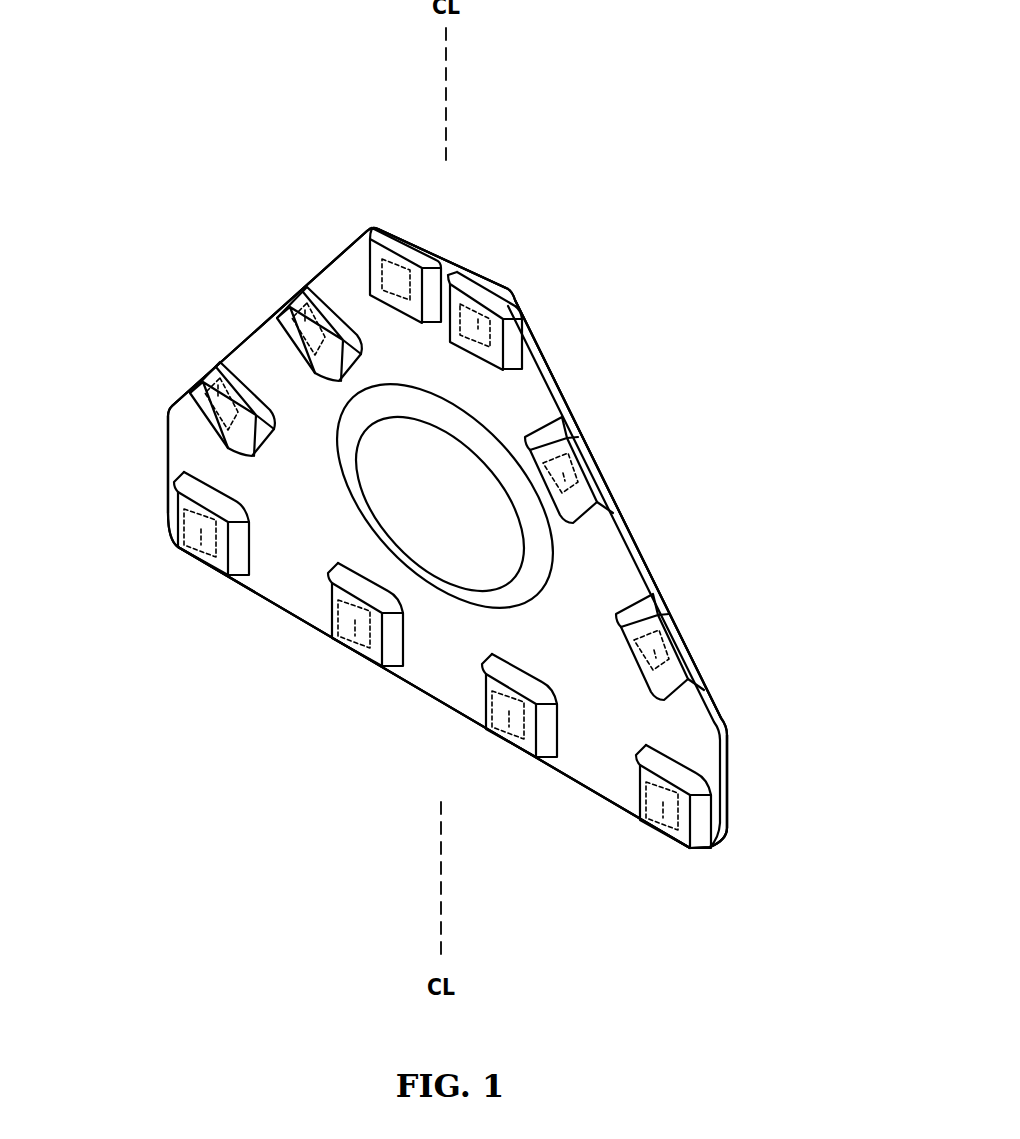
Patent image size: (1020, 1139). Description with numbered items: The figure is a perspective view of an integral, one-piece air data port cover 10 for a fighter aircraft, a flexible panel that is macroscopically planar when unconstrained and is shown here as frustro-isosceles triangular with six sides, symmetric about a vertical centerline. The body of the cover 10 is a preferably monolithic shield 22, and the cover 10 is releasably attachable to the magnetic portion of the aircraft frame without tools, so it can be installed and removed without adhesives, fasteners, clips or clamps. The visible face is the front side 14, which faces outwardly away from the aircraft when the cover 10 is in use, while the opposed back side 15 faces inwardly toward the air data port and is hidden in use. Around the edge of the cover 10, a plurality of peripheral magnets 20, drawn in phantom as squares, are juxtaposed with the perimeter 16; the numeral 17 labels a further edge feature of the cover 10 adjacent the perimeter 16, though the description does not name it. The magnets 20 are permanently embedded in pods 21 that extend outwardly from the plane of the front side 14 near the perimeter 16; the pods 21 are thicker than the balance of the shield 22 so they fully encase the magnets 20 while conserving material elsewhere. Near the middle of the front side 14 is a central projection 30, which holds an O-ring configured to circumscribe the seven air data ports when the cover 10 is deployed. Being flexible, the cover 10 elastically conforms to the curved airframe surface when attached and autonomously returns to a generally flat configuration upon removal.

The air data port cover 10 is at (630, 118).
The front side 14 is at (563, 645).
The back side 15 is at (728, 785).
The perimeter 16 is at (408, 250).
The side face 17 is at (265, 320).
The peripheral magnets 20 is at (307, 303).
The pods 21 is at (287, 308).
The shield 22 is at (613, 557).
The central projection 30 is at (450, 505).